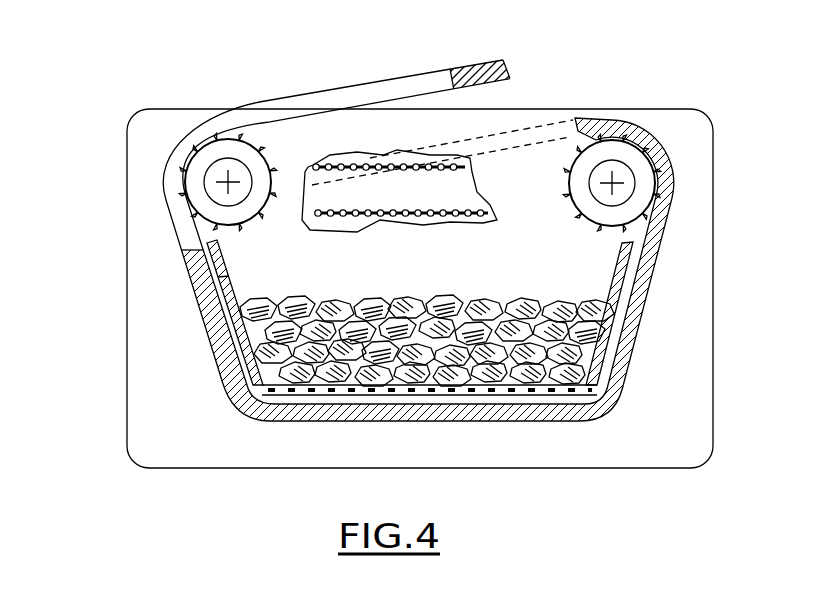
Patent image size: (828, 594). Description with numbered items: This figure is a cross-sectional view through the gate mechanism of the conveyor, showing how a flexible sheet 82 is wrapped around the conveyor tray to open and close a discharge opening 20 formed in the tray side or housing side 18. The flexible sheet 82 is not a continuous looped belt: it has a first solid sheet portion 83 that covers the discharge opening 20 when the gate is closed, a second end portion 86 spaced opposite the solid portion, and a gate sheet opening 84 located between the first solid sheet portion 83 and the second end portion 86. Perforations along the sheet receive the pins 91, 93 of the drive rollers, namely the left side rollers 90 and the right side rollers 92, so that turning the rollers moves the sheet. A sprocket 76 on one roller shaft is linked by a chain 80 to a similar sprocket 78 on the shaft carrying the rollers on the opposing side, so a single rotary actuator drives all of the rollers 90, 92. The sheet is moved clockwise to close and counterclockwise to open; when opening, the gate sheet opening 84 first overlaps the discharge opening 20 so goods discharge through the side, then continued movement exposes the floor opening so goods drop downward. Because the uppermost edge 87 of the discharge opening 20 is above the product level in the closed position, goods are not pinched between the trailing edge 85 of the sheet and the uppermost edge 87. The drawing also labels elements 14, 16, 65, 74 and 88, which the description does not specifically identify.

The conveyor belt 14 is at (458, 395).
The right side liner 16 is at (623, 259).
The housing side 18 is at (220, 258).
The discharge opening 20 is at (433, 405).
The side wall edge 65 is at (183, 252).
The housing frame 74 is at (702, 203).
The sprocket 76 is at (618, 179).
The sprocket 78 is at (214, 187).
The chain 80 is at (443, 218).
The flexible sheet 82 is at (240, 408).
The first solid sheet portion 83 is at (350, 422).
The gate sheet opening 84 is at (380, 88).
The trailing edge 85 is at (597, 115).
The second end portion 86 is at (482, 63).
The uppermost edge 87 is at (227, 281).
The hidden cover line 88 is at (447, 145).
The left side rollers 90 is at (187, 163).
The pins 91 is at (265, 148).
The right side rollers 92 is at (622, 112).
The pins 93 is at (567, 185).